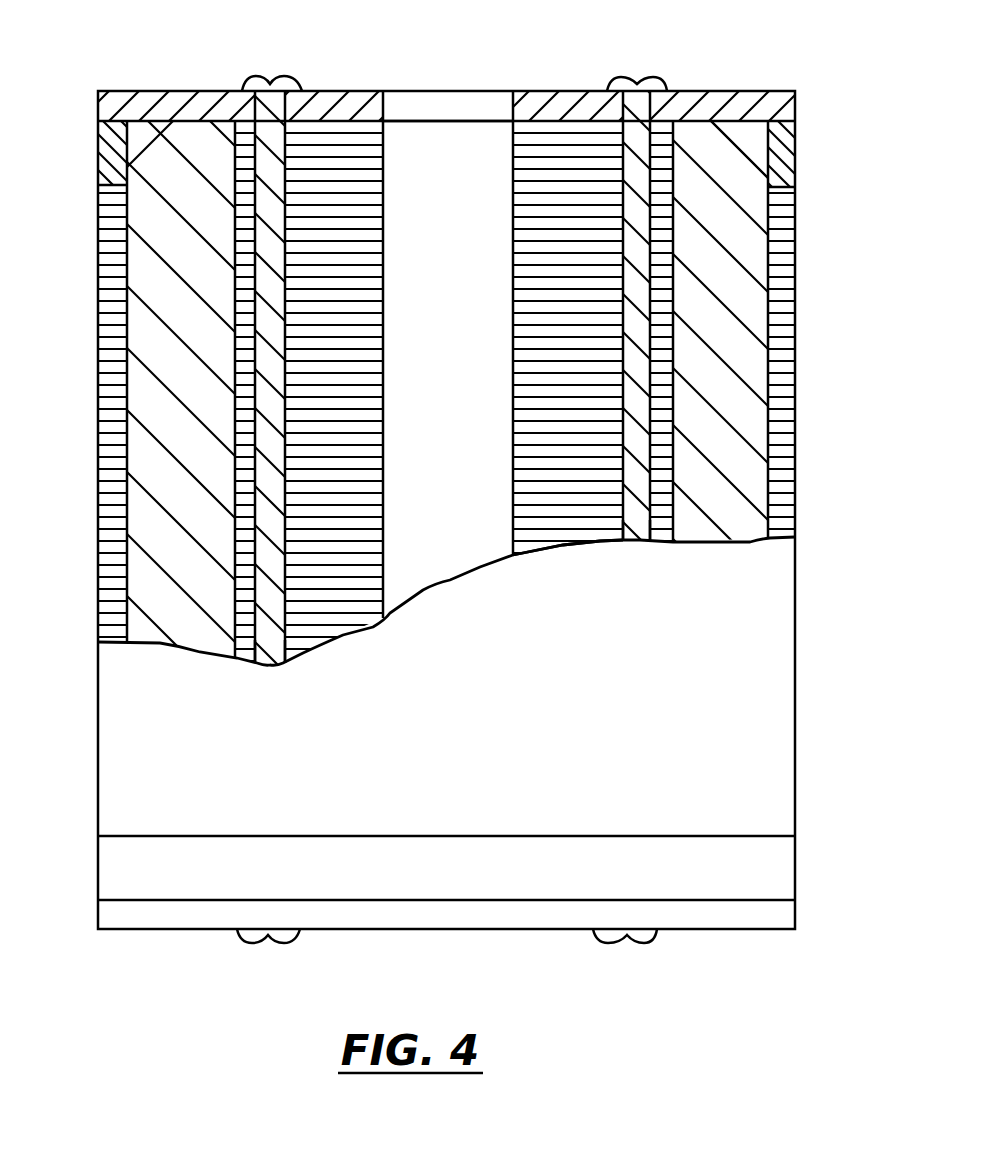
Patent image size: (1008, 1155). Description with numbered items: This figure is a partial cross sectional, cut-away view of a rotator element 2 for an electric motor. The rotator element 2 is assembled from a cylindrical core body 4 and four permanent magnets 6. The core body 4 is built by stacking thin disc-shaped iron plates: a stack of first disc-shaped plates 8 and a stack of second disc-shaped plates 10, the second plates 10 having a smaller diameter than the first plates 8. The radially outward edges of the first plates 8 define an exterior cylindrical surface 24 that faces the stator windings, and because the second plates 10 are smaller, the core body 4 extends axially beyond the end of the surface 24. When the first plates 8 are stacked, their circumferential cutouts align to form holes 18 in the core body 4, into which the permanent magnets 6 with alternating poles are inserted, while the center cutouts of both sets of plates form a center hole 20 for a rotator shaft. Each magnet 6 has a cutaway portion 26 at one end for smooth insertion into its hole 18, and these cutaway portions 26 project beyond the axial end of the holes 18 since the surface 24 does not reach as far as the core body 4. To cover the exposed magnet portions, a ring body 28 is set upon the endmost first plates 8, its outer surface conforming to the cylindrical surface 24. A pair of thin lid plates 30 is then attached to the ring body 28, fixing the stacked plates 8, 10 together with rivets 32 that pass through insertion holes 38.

The rotator element 2 is at (868, 934).
The cylindrical core body 4 is at (810, 574).
The permanent magnets 6 is at (150, 462).
The first disc-shaped plates 8 is at (593, 520).
The second disc-shaped plates 10 is at (567, 137).
The holes 18 is at (124, 264).
The center hole 20 is at (437, 137).
The exterior cylindrical surface 24 is at (98, 320).
The cutaway portion 26 is at (160, 150).
The ring body 28 is at (105, 152).
The lid plates 30 is at (338, 90).
The rivets 32 is at (257, 77).
The insertion holes 38 is at (283, 622).